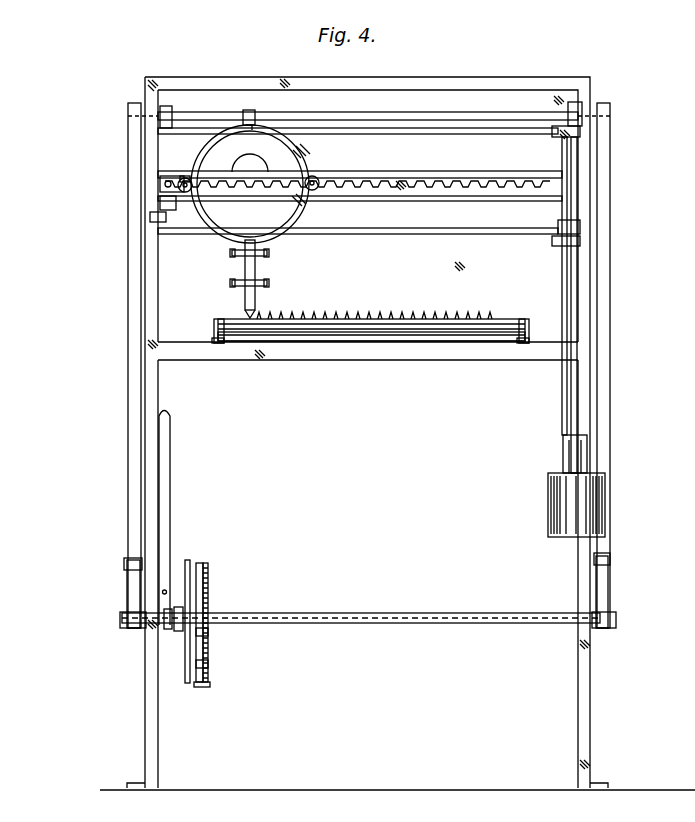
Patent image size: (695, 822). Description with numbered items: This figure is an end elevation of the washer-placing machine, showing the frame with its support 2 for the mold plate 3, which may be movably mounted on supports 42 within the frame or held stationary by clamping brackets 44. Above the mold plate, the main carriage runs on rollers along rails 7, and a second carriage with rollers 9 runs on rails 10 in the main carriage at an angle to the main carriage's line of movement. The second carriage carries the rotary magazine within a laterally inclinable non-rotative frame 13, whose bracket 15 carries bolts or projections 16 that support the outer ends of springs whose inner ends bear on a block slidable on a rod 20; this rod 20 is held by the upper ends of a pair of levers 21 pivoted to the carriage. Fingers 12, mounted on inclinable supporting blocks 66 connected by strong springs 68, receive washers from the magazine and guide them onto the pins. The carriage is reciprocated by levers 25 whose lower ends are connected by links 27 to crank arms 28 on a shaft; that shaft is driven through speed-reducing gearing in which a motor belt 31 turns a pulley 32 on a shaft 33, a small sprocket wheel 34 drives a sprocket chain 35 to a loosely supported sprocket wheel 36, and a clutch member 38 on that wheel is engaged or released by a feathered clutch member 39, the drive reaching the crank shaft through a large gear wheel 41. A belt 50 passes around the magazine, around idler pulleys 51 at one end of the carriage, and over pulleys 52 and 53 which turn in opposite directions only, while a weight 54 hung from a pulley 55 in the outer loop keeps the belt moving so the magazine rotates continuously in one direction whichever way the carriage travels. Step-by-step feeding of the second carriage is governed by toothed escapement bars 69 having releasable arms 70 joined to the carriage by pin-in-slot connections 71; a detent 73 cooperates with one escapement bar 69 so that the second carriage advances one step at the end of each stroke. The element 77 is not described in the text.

The support 2 is at (215, 346).
The mold plate 3 is at (367, 322).
The rails 7 is at (420, 315).
The rollers 9 is at (190, 192).
The rails 10 is at (458, 198).
The fingers 12 is at (256, 300).
The laterally inclinable non-rotative frame 13 is at (292, 218).
The bracket 15 is at (248, 110).
The bolts or projections 16 is at (258, 112).
The rod 20 is at (403, 115).
The levers 21 is at (143, 128).
The levers 25 is at (128, 343).
The links 27 is at (128, 595).
The crank arms 28 is at (130, 566).
The belt 31 is at (188, 560).
The pulley 32 is at (200, 563).
The shaft 33 is at (352, 615).
The small sprocket wheel 34 is at (208, 633).
The sprocket chain 35 is at (208, 667).
The sprocket wheel 36 is at (200, 687).
The clutch member 38 is at (177, 624).
The clutch member 39 is at (166, 620).
The large gear wheel 41 is at (208, 600).
The supports 42 is at (437, 342).
The brackets 44 is at (222, 320).
The belt 50 is at (470, 131).
The idler pulleys 51 is at (553, 128).
The pulley 52 is at (580, 226).
The pulley 53 is at (567, 315).
The weight 54 is at (585, 500).
The pulley 55 is at (585, 440).
The supporting block 66 is at (245, 257).
The springs 68 is at (265, 283).
The toothed escapement bars 69 is at (445, 180).
The arms 70 is at (168, 212).
The pin-in-slot connections 71 is at (175, 196).
The detent 73 is at (185, 178).
The bracket 77 is at (152, 217).